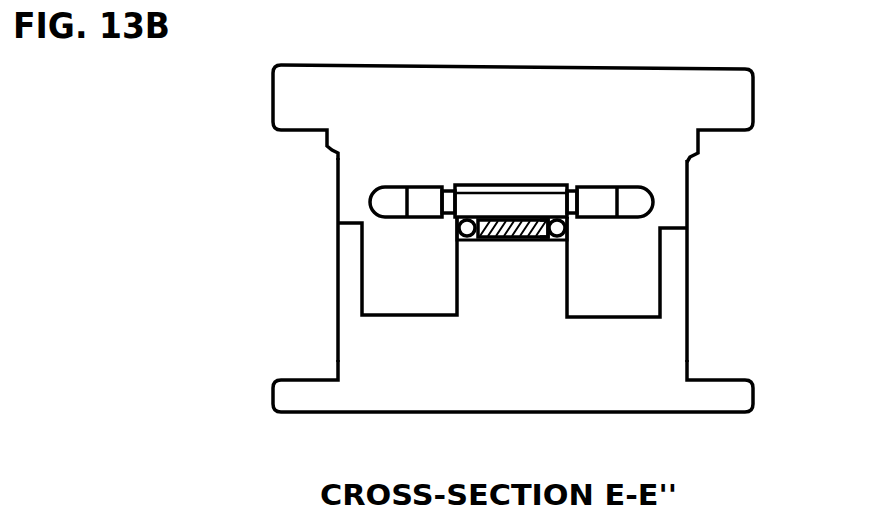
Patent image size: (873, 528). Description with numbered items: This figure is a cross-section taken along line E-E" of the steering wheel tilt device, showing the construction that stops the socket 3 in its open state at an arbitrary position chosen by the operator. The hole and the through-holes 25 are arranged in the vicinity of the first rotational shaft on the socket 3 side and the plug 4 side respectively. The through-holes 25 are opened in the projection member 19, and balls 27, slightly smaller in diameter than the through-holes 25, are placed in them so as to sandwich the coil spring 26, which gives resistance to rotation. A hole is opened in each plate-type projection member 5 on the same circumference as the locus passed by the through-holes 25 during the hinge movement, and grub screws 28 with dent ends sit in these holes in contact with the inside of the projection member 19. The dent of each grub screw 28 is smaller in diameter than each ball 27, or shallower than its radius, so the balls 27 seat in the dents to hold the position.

The socket 3 is at (725, 100).
The plug 4 is at (722, 398).
The plate-type projection member 5 is at (643, 292).
The projection member 19 is at (512, 278).
The through-hole 25 is at (493, 243).
The coil spring 26 is at (540, 243).
The ball 27 is at (458, 228).
The grub screw 28 is at (425, 200).